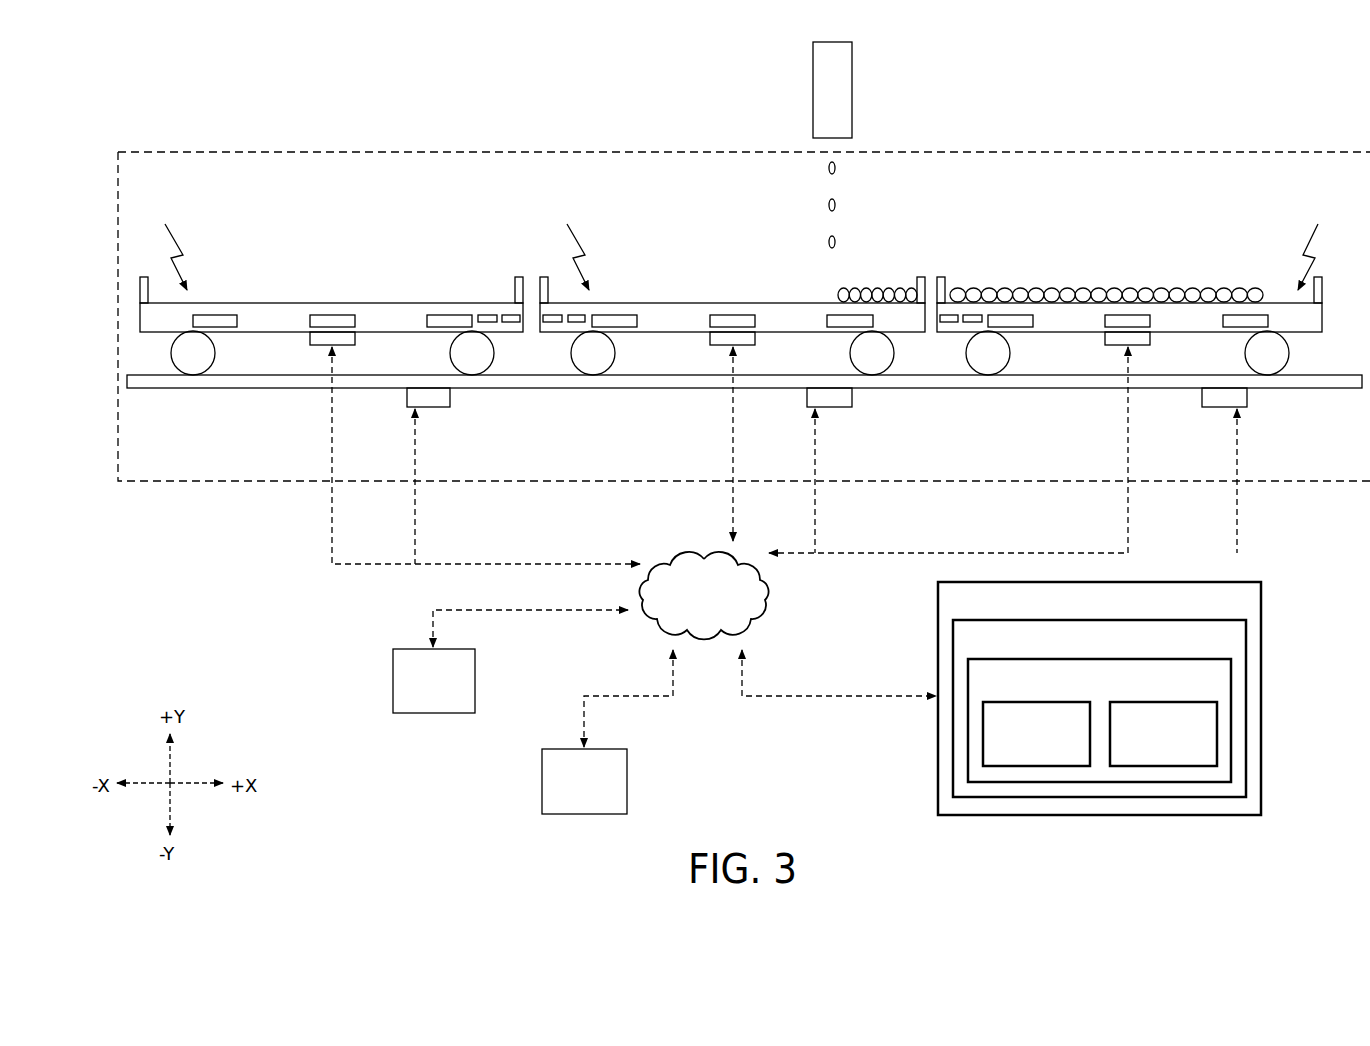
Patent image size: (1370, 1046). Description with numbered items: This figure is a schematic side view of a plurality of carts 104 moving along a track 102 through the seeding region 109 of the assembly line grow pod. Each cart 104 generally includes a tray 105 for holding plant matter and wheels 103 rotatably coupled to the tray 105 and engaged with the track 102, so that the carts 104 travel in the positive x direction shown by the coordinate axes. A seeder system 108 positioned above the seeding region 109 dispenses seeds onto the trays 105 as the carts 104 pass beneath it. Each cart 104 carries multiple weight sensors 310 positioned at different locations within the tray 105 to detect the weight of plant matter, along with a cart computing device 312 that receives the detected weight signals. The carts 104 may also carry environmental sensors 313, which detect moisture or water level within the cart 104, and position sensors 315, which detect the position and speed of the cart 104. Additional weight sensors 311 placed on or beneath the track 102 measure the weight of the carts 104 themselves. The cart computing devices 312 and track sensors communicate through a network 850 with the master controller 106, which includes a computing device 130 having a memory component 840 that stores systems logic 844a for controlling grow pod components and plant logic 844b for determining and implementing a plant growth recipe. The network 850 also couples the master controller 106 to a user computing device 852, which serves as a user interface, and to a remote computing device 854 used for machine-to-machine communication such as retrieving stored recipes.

The track 102 is at (165, 389).
The wheel 103 is at (190, 377).
The cart 104 is at (740, 244).
The tray 105 is at (140, 318).
The master controller 106 is at (1036, 718).
The seeder system 108 is at (852, 97).
The seeding region 109 is at (262, 152).
The computing device 130 is at (1141, 737).
The weight sensor 310 is at (222, 315).
The weight sensor 311 is at (428, 407).
The cart computing device 312 is at (320, 350).
The environmental sensor 313 is at (488, 313).
The position sensor 315 is at (975, 312).
The memory component 840 is at (1149, 757).
The systems logic 844a is at (1034, 766).
The plant logic 844b is at (1162, 766).
The network 850 is at (728, 607).
The user computing device 852 is at (393, 685).
The remote computing device 854 is at (542, 780).